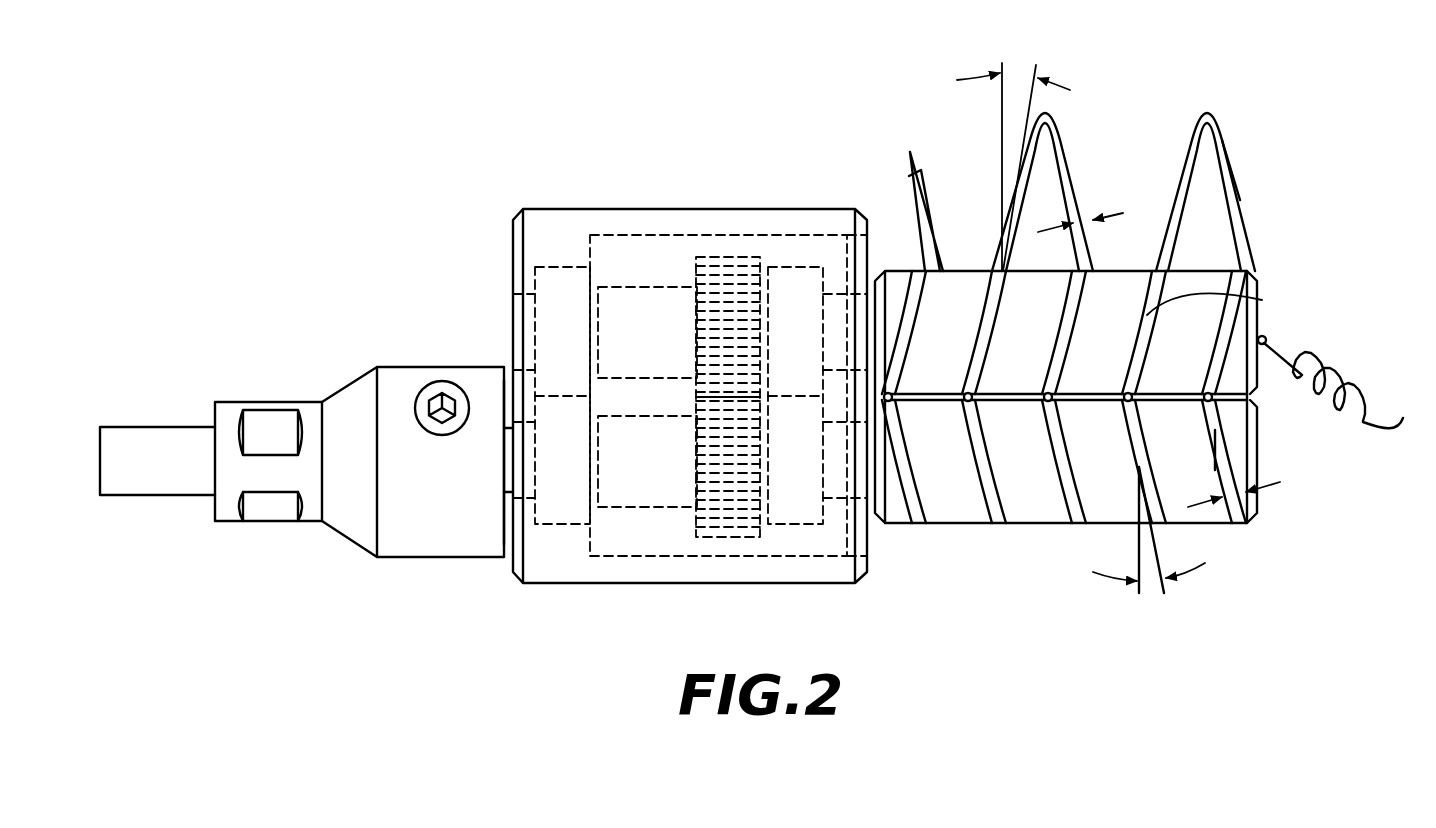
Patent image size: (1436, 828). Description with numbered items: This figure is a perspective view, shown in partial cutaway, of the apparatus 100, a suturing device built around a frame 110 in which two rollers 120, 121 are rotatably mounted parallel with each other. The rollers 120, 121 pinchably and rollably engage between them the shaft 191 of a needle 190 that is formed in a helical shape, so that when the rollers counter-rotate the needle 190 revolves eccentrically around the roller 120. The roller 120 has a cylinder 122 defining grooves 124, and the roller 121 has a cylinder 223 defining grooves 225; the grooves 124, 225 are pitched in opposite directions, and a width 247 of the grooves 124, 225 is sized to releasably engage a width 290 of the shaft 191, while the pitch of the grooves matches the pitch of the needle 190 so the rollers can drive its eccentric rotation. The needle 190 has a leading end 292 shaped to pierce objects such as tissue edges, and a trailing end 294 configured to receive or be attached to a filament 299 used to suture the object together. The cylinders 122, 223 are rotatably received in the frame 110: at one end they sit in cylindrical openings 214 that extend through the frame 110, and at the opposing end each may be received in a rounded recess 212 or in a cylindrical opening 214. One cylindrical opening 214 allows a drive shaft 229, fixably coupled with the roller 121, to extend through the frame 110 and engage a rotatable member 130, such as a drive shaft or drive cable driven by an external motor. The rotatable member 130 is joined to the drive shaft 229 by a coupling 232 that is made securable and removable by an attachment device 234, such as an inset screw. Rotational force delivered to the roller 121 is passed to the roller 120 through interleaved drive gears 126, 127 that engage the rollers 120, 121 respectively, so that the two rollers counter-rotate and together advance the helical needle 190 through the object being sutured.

The apparatus 100 is at (325, 97).
The frame 110 is at (540, 194).
The roller 120 is at (1240, 367).
The roller 121 is at (1240, 432).
The cylinder 122 is at (632, 293).
The grooves 124 is at (1070, 300).
The drive gear 126 is at (727, 257).
The drive gear 127 is at (727, 537).
The rotatable member 130 is at (157, 427).
The needle 190 is at (1240, 92).
The shaft 191 is at (1237, 186).
The rounded recess 212 is at (528, 313).
The cylindrical openings 214 is at (529, 500).
The cylinder 223 is at (633, 507).
The grooves 225 is at (1072, 498).
The drive shaft 229 is at (505, 467).
The coupling 232 is at (397, 545).
The attachment device 234 is at (433, 390).
The width 247 is at (1233, 523).
The width 290 is at (1087, 207).
The leading end 292 is at (910, 148).
The trailing end 294 is at (1263, 322).
The filament 299 is at (1338, 370).